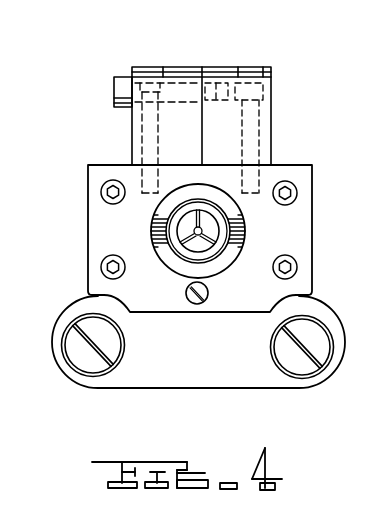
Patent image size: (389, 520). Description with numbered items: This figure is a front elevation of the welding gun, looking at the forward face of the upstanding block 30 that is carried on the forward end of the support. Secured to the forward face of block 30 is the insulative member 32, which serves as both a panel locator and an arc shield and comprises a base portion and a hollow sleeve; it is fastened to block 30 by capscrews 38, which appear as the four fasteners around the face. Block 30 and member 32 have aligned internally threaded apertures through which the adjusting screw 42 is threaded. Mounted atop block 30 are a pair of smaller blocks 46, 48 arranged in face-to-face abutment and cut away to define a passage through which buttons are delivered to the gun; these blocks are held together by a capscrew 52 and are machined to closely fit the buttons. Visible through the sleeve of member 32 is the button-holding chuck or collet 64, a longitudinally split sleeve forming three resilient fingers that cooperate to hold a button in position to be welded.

The upstanding block 30 is at (198, 373).
The insulative member 32 is at (171, 280).
The capscrews 38 is at (103, 202).
The adjusting screw 42 is at (194, 304).
The smaller block 46 is at (262, 150).
The smaller block 48 is at (143, 127).
The capscrew 52 is at (116, 82).
The button-holding chuck or collet 64 is at (205, 247).